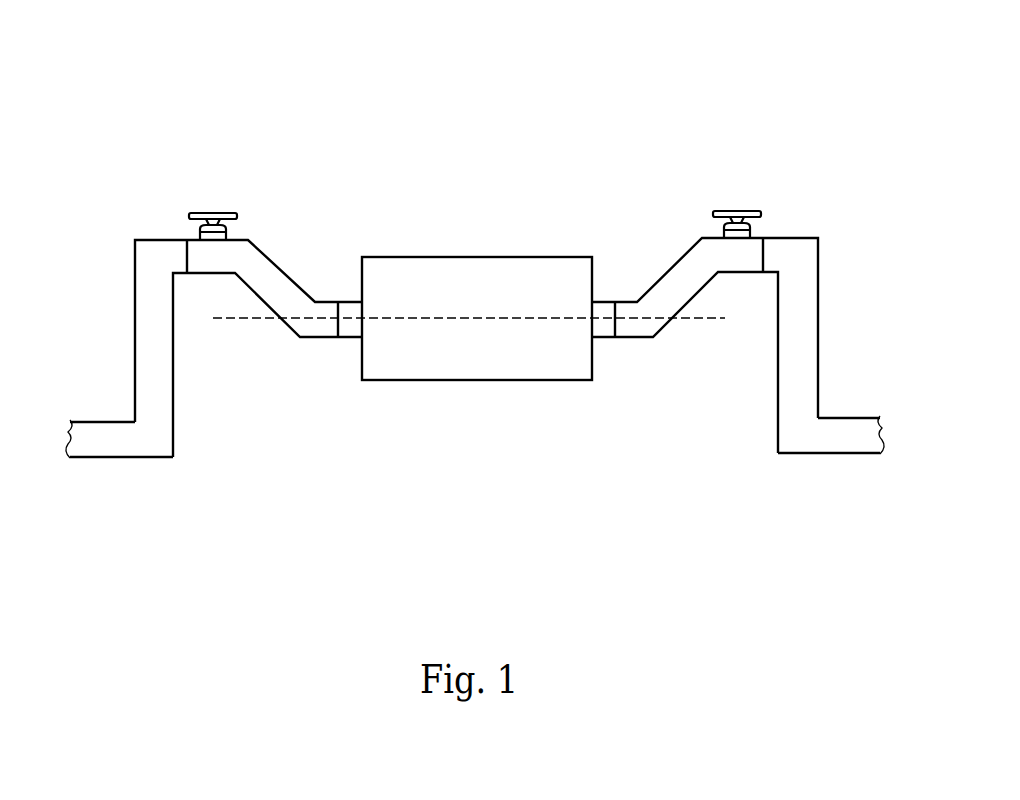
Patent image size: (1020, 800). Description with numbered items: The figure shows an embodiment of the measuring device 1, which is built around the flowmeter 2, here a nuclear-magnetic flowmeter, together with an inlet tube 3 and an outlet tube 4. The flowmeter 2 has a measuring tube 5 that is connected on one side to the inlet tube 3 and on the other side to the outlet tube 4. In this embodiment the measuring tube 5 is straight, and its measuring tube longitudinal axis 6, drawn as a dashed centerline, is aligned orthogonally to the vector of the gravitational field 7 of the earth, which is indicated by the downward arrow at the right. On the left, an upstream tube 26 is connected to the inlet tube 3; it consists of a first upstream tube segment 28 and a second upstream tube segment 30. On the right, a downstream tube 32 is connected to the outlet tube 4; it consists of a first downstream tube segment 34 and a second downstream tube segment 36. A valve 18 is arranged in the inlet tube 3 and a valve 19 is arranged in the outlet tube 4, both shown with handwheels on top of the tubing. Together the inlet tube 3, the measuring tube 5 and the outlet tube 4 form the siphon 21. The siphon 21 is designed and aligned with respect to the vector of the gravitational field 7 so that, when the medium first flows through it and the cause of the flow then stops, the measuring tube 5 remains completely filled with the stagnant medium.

The measuring device 1 is at (490, 298).
The flowmeter 2 is at (417, 296).
The inlet tube 3 is at (292, 240).
The outlet tube 4 is at (665, 238).
The measuring tube 5 is at (598, 324).
The measuring tube longitudinal axis 6 is at (225, 322).
The vector of the gravitational field 7 is at (938, 336).
The valve 18 is at (200, 238).
The valve 19 is at (752, 230).
The siphon 21 is at (475, 452).
The upstream tube 26 is at (205, 480).
The first upstream tube segment 28 is at (95, 455).
The second upstream tube segment 30 is at (140, 350).
The downstream tube 32 is at (752, 467).
The first downstream tube segment 34 is at (838, 448).
The second downstream tube segment 36 is at (813, 343).